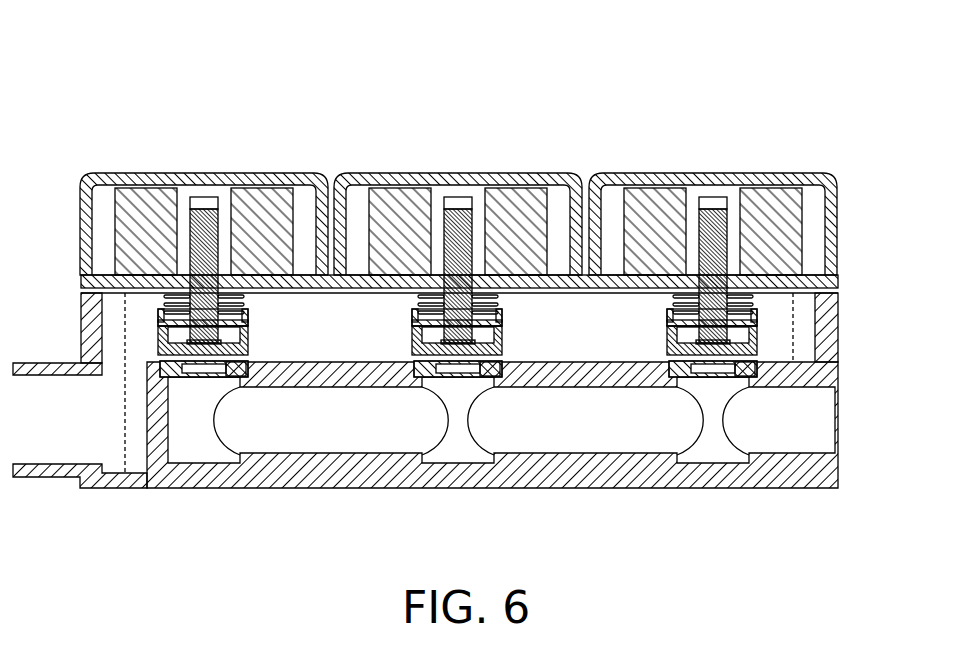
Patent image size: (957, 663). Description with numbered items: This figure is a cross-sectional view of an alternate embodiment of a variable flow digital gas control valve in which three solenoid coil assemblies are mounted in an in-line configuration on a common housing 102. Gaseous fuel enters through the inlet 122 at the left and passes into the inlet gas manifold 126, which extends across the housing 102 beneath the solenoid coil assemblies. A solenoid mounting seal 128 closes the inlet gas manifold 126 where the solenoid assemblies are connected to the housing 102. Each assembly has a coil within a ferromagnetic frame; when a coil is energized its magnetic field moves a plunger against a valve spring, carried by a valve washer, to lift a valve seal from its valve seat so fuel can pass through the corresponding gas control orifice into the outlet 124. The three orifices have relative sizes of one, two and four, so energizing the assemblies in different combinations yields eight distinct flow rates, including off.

The housing 102 is at (595, 488).
The inlet 122 is at (48, 455).
The outlet 124 is at (802, 437).
The inlet gas manifold 126 is at (117, 332).
The solenoid mounting seal 128 is at (81, 288).